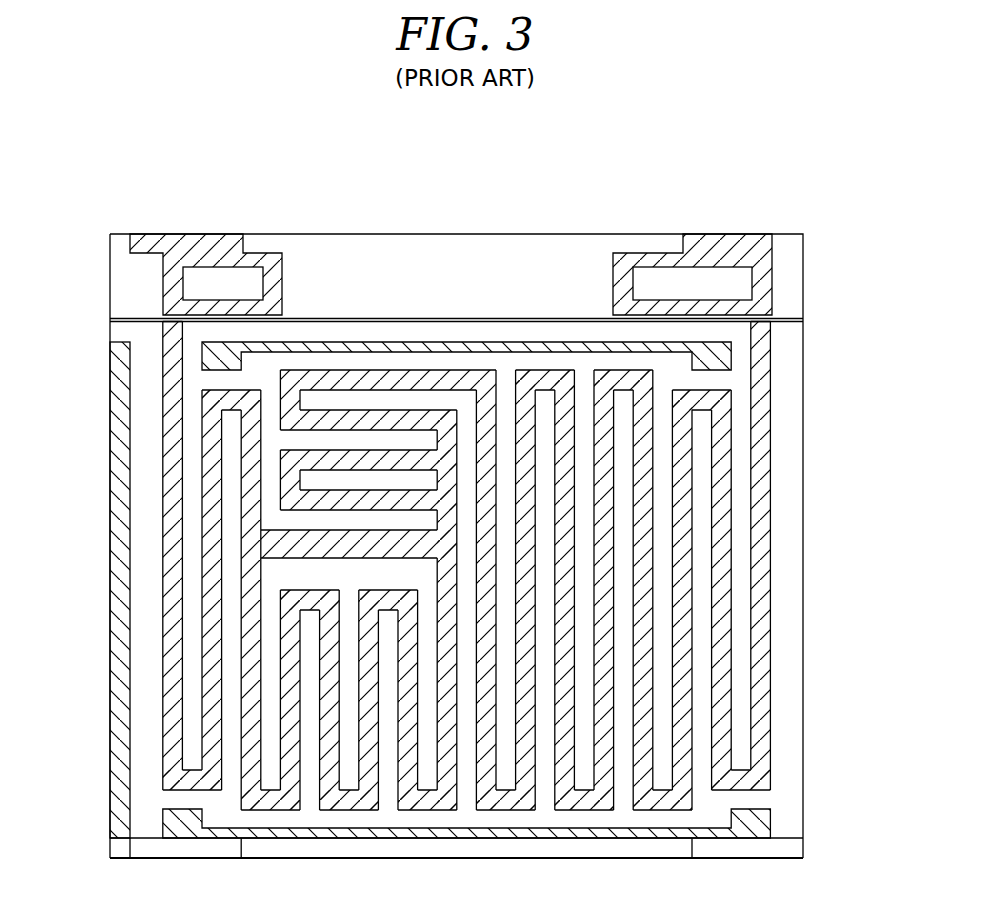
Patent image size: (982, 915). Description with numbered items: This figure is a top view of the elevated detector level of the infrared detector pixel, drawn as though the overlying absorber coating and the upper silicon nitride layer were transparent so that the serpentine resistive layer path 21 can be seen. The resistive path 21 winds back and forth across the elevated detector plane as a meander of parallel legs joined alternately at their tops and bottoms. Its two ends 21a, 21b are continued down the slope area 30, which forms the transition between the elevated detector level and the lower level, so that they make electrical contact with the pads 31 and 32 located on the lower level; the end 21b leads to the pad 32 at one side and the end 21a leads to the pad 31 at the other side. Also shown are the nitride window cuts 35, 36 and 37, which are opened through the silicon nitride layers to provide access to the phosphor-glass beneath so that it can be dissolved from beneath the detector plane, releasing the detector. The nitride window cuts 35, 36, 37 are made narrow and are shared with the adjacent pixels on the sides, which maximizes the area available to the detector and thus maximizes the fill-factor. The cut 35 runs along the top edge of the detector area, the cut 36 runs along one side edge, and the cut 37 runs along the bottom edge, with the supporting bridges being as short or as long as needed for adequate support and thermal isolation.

The serpentine resistive layer path 21 is at (175, 520).
The end of the resistive path 21a is at (758, 332).
The end of the resistive path 21b is at (175, 335).
The slope area 30 is at (806, 316).
The pad 31 is at (712, 283).
The pad 32 is at (203, 283).
The nitride window cut 35 is at (228, 355).
The nitride window cut 36 is at (123, 417).
The nitride window cut 37 is at (172, 825).